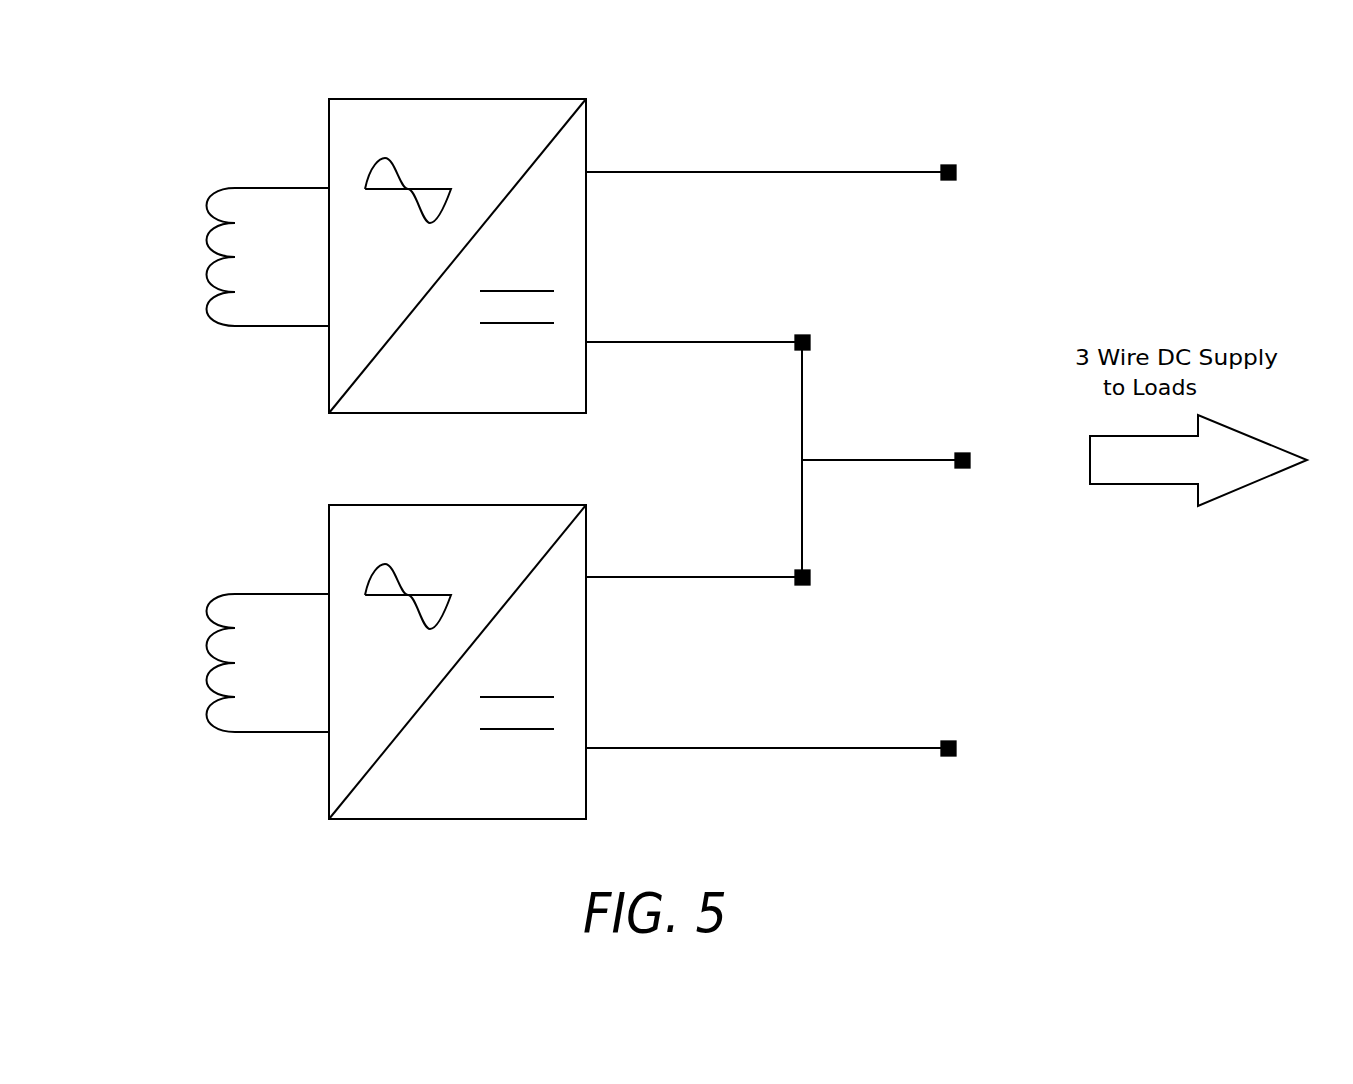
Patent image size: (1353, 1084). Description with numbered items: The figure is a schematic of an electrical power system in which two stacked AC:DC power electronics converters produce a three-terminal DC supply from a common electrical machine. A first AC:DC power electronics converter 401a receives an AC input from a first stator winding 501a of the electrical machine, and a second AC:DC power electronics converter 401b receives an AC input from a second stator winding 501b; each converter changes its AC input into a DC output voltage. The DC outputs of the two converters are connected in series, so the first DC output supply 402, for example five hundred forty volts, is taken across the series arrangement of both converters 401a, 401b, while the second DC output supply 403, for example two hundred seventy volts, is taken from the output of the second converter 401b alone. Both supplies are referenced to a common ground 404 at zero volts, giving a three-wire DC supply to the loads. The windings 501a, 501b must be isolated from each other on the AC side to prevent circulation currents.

The first AC:DC power electronics converter 401a is at (329, 121).
The second AC:DC power electronics converter 401b is at (329, 527).
The first winding 501a is at (207, 201).
The second winding 501b is at (207, 607).
The first DC output supply 402 is at (956, 172).
The second DC output supply 403 is at (970, 460).
The common ground 404 is at (956, 748).